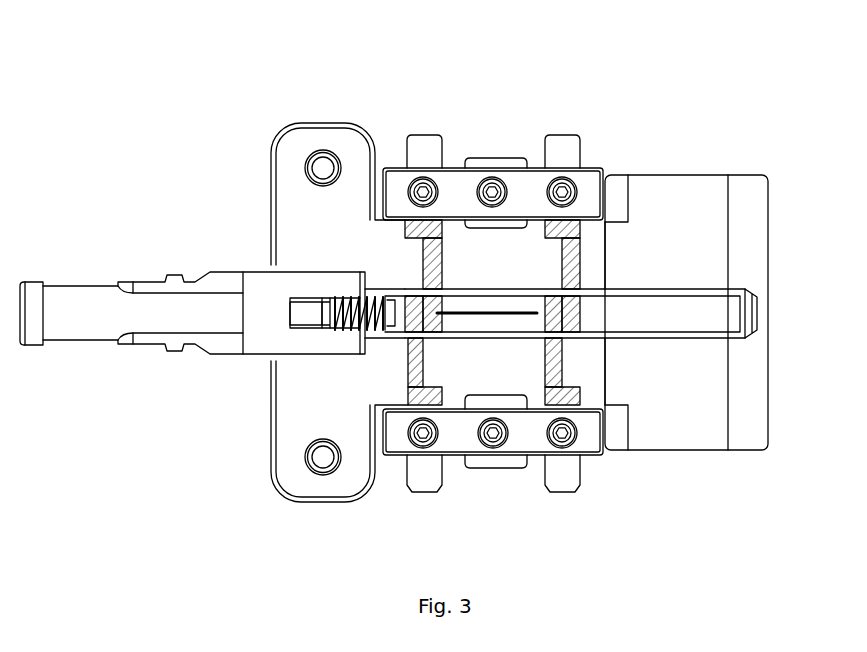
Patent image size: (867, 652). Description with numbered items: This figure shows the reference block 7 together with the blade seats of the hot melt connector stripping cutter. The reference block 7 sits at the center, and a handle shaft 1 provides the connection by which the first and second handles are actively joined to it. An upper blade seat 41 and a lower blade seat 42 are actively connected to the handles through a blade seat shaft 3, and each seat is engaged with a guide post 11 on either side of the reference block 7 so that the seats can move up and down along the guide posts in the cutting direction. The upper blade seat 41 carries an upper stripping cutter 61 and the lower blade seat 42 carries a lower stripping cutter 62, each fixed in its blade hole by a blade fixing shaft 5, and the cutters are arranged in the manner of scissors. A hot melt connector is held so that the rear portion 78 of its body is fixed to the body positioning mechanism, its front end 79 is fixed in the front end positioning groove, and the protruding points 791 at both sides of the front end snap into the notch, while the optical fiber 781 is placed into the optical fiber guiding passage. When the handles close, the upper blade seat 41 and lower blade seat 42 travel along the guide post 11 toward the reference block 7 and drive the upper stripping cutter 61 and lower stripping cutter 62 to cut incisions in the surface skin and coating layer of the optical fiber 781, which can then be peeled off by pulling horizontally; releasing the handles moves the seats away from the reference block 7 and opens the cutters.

The handle shaft 1 is at (323, 160).
The guide post 11 is at (423, 150).
The blade seat shaft 3 is at (492, 188).
The upper blade seat 41 is at (528, 192).
The blade fixing shaft 5 is at (560, 188).
The reference block 7 is at (670, 218).
The upper stripping cutter 61 is at (583, 253).
The lower stripping cutter 62 is at (550, 370).
The rear portion of the body of the hot melt connector 78 is at (267, 302).
The optical fiber 781 is at (468, 313).
The front end of the hot melt connector 79 is at (348, 308).
The protruding points 791 is at (302, 332).
The lower blade seat 42 is at (538, 440).